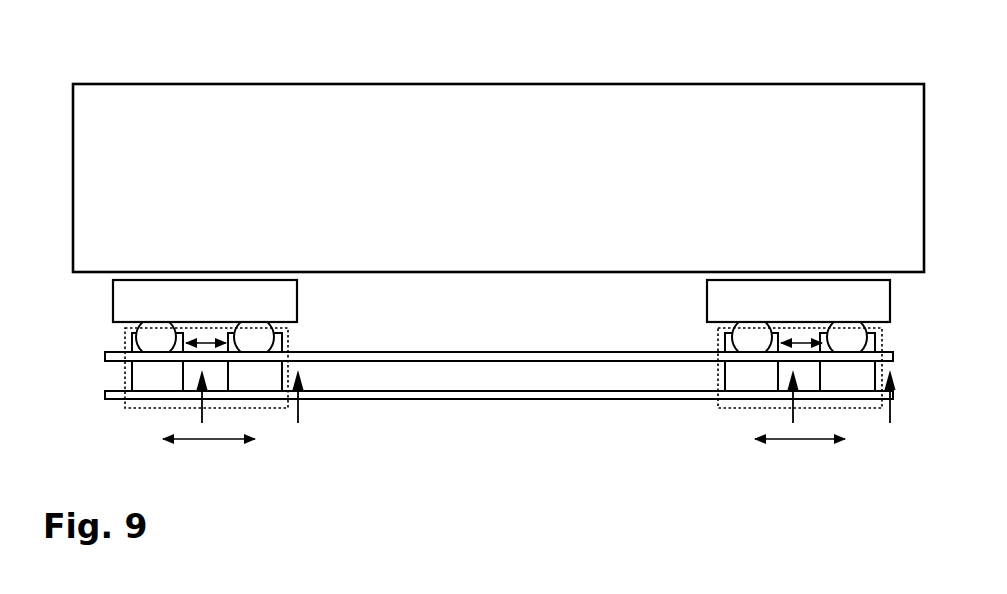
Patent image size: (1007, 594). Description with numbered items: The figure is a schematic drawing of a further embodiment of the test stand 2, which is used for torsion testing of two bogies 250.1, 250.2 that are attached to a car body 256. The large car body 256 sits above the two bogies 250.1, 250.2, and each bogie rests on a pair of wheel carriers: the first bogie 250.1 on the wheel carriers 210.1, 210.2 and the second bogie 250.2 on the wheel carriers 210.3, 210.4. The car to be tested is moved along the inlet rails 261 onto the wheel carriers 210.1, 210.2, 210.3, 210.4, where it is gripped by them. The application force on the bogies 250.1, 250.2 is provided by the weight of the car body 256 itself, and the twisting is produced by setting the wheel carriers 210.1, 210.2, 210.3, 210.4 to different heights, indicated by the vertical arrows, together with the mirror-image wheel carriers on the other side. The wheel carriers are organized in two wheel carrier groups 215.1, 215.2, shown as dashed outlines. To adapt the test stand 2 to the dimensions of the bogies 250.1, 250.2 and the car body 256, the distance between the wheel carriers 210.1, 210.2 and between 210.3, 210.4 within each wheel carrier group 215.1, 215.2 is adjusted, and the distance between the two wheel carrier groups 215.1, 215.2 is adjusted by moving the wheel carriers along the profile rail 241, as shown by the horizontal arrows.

The test stand 2 is at (828, 480).
The car body 256 is at (112, 100).
The bogie 250.1 is at (120, 307).
The bogie 250.2 is at (722, 305).
The wheel carrier group 215.1 is at (122, 403).
The wheel carrier group 215.2 is at (718, 403).
The wheel carrier 210.1 is at (145, 390).
The wheel carrier 210.2 is at (262, 390).
The wheel carrier 210.3 is at (739, 388).
The wheel carrier 210.4 is at (858, 388).
The inlet rail 261 is at (457, 355).
The profile rail 241 is at (402, 398).